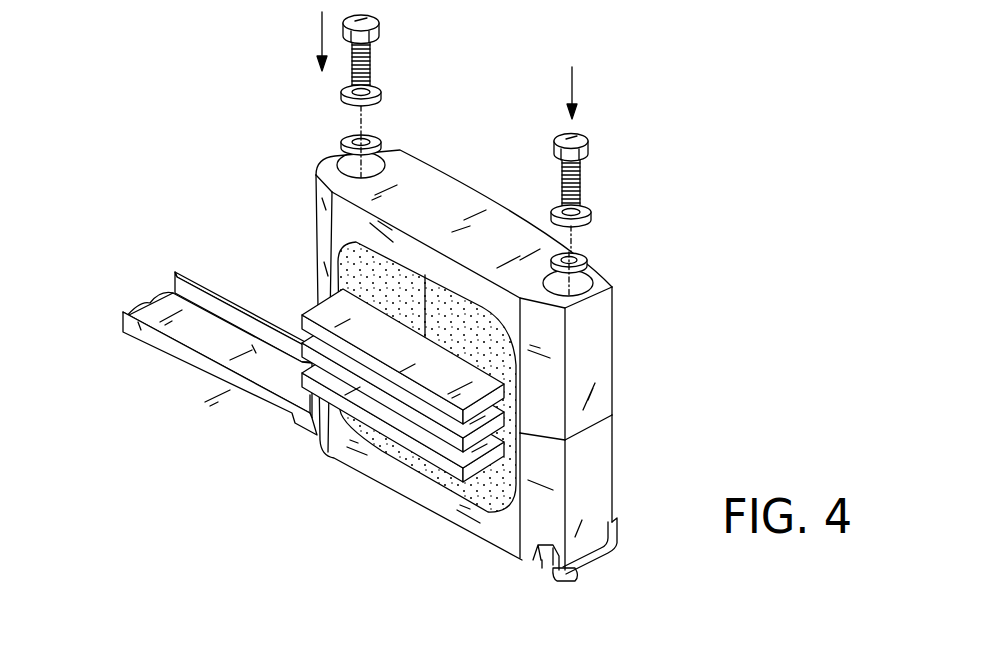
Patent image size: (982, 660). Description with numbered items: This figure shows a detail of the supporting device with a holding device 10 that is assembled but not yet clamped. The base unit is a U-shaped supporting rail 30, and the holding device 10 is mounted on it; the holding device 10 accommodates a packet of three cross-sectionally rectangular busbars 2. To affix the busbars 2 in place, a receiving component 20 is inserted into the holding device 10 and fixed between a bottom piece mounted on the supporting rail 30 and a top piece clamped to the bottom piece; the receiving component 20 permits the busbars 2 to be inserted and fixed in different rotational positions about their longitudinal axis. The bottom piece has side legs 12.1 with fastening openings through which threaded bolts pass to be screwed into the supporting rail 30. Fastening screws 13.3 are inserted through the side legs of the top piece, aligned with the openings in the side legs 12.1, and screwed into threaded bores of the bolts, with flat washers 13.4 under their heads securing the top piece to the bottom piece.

The holding device 10 is at (613, 360).
The side leg of the bottom piece 12.1 is at (613, 452).
The receiving component 20 is at (347, 243).
The busbar 2 is at (330, 317).
The supporting rail 30 is at (225, 378).
The fastening screw 13.3 is at (583, 177).
The washer 13.4 is at (588, 220).